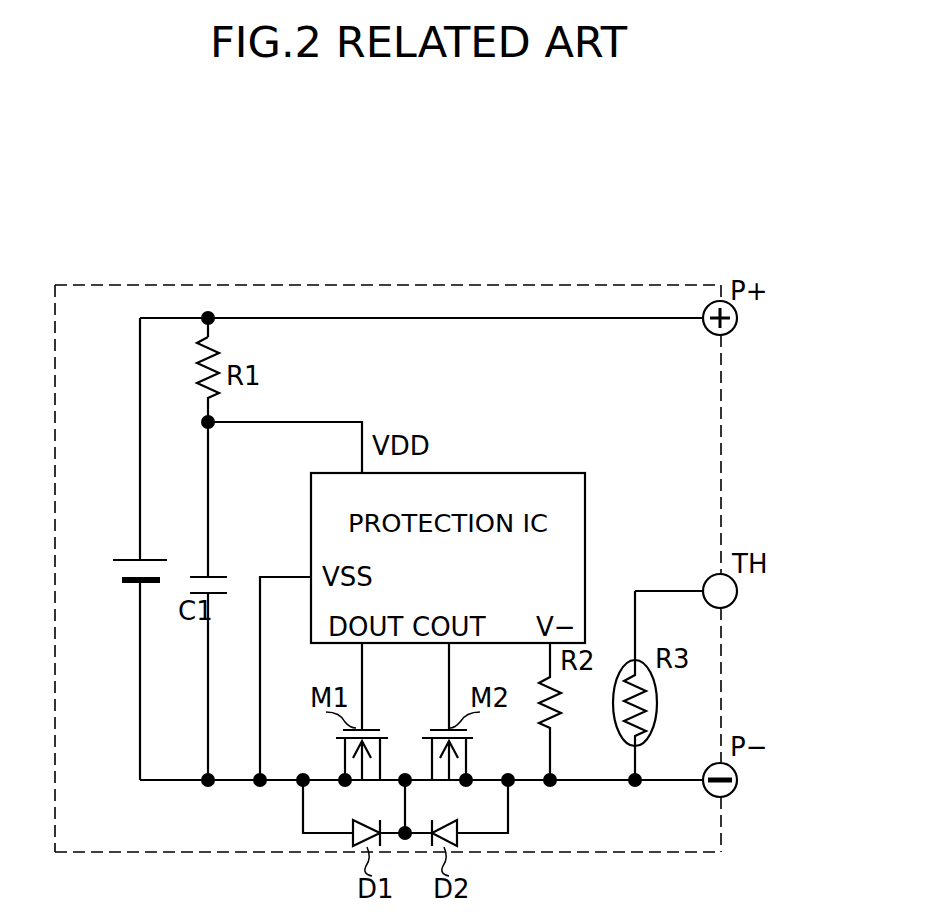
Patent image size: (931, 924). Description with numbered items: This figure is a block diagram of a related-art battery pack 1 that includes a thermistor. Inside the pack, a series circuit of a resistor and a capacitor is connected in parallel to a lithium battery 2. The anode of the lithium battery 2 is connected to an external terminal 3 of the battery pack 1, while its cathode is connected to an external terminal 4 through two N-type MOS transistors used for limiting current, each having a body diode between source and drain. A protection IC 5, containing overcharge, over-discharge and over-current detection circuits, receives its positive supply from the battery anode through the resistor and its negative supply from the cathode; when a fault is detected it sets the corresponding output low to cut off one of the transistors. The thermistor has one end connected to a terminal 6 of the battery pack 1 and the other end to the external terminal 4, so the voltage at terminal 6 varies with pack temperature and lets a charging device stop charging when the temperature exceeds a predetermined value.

The battery pack 1 is at (531, 285).
The lithium battery 2 is at (120, 572).
The external terminal 3 is at (737, 318).
The external terminal 4 is at (737, 780).
The protection IC 5 is at (546, 473).
The terminal 6 is at (737, 591).